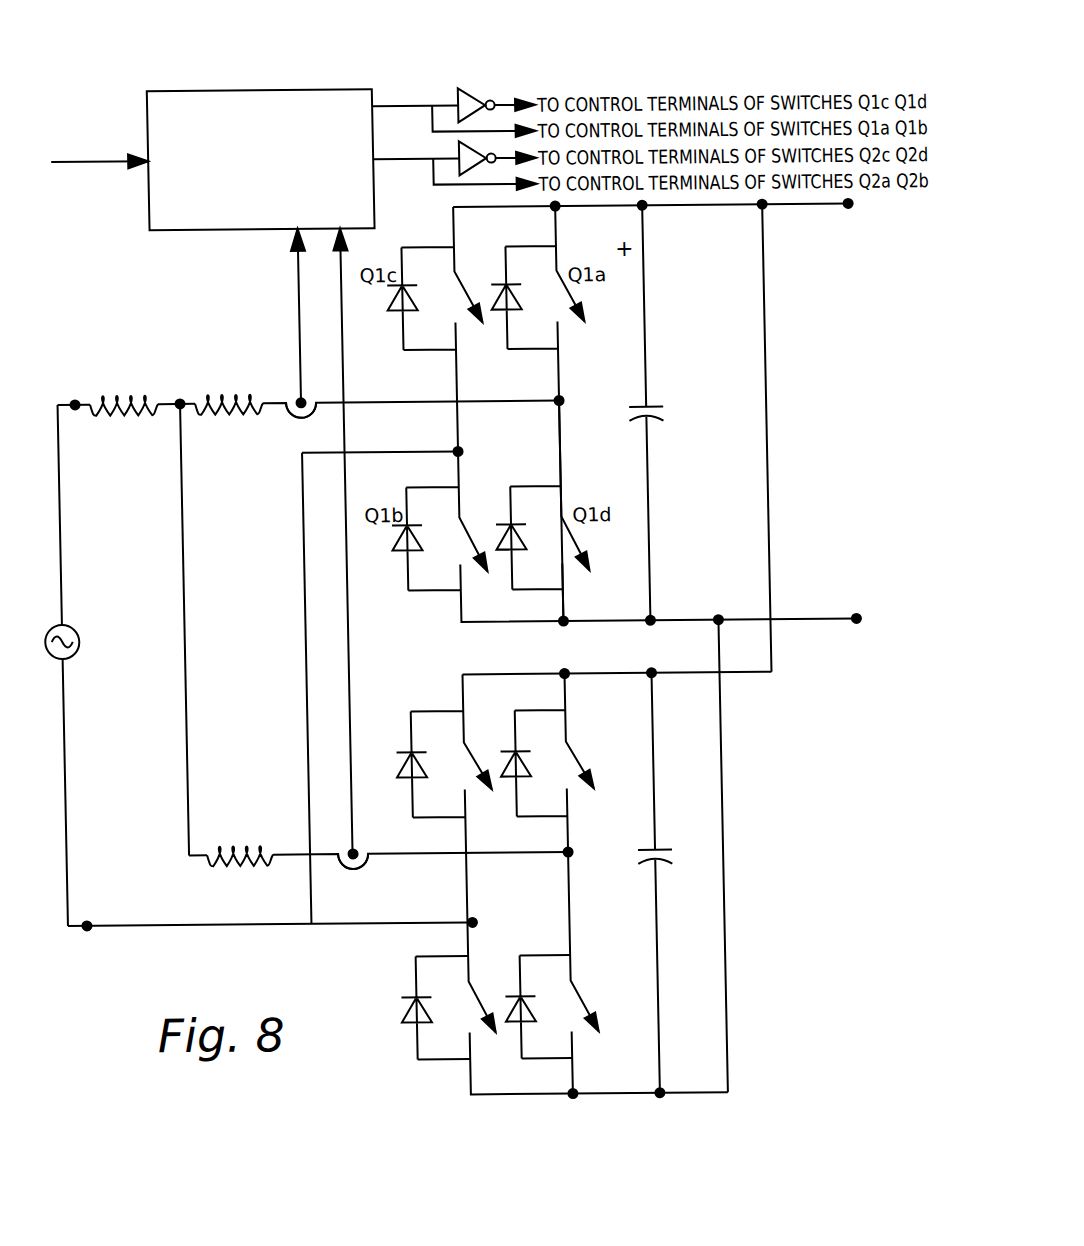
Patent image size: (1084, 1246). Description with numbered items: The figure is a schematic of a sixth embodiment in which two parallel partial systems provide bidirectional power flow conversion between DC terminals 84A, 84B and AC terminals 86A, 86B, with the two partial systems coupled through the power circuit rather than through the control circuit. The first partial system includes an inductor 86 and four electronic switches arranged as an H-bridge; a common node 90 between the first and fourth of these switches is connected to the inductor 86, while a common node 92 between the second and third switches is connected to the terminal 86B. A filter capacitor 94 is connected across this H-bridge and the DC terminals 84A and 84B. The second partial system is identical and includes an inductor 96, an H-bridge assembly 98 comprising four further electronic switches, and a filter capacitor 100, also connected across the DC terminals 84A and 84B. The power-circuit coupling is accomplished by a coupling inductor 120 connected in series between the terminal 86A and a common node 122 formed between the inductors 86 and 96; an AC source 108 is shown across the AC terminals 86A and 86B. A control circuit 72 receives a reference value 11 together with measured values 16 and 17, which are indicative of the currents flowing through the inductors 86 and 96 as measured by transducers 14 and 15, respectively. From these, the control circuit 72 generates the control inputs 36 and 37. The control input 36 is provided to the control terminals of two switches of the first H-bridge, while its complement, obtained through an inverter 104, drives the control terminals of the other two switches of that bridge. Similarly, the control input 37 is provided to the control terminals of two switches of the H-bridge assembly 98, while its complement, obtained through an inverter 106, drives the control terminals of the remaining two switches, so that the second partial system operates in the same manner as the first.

The reference value 11 is at (110, 156).
The control circuit 72 is at (268, 89).
The control input 36 is at (418, 105).
The control input 37 is at (387, 158).
The inverter 104 is at (485, 89).
The inverter 106 is at (476, 174).
The measured value 16 is at (305, 313).
The measured value 17 is at (347, 365).
The common node 122 is at (184, 402).
The AC terminal 86A is at (79, 402).
The AC terminal 86B is at (81, 922).
The coupling inductor 120 is at (144, 418).
The inductor 86 is at (236, 418).
The inductor 96 is at (229, 843).
The transducer 14 is at (301, 420).
The transducer 15 is at (356, 866).
The AC source 108 is at (66, 621).
The common node 90 is at (563, 402).
The common node 92 is at (461, 452).
The filter capacitor 94 is at (643, 416).
The DC terminal 84A is at (856, 208).
The DC terminal 84B is at (856, 622).
The H-bridge assembly 98 is at (538, 668).
The filter capacitor 100 is at (661, 851).